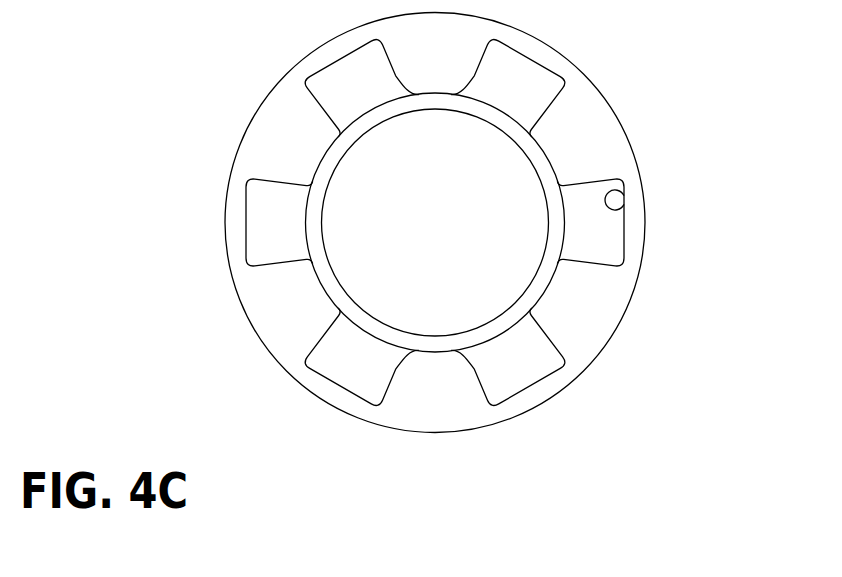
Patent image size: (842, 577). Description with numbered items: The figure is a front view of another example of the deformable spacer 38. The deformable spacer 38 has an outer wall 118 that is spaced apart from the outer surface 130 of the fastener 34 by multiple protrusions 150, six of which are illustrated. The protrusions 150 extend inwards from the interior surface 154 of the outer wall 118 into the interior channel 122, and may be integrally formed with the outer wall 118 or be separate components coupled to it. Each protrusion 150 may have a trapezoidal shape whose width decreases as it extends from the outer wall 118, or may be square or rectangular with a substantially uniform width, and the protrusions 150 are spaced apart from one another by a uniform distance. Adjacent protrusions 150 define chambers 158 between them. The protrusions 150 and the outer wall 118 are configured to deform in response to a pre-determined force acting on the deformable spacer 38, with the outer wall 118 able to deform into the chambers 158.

The deformable spacer 38 is at (622, 93).
The fastener 34 is at (472, 287).
The outer wall 118 is at (637, 229).
The interior channel 122 is at (290, 218).
The outer surface 130 is at (553, 240).
The protrusion 150 is at (445, 395).
The interior surface 154 is at (615, 193).
The chamber 158 is at (363, 375).